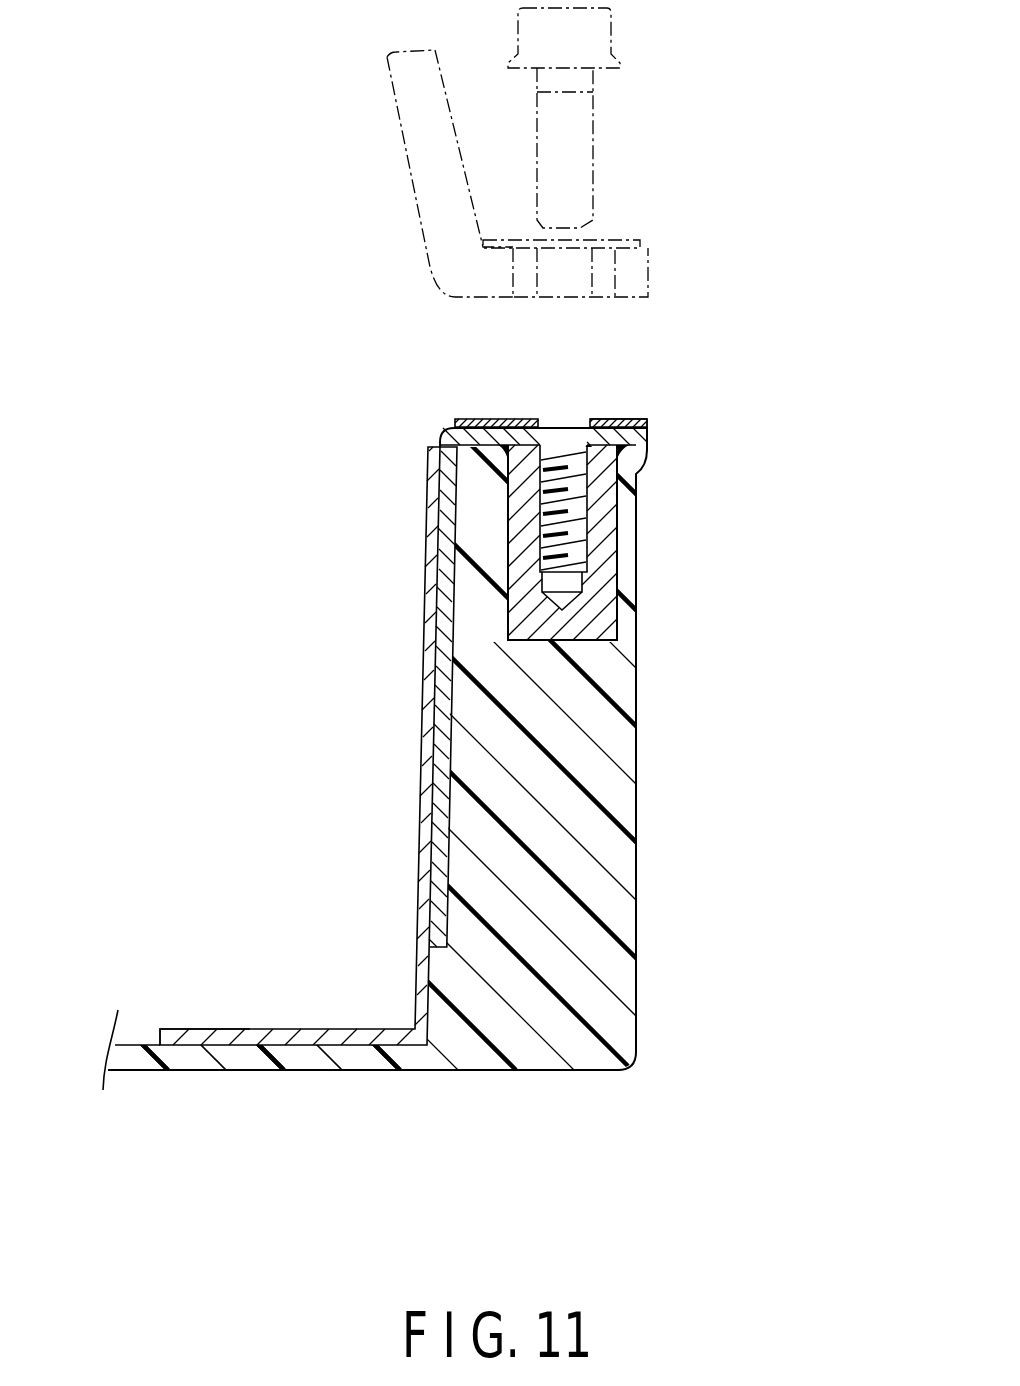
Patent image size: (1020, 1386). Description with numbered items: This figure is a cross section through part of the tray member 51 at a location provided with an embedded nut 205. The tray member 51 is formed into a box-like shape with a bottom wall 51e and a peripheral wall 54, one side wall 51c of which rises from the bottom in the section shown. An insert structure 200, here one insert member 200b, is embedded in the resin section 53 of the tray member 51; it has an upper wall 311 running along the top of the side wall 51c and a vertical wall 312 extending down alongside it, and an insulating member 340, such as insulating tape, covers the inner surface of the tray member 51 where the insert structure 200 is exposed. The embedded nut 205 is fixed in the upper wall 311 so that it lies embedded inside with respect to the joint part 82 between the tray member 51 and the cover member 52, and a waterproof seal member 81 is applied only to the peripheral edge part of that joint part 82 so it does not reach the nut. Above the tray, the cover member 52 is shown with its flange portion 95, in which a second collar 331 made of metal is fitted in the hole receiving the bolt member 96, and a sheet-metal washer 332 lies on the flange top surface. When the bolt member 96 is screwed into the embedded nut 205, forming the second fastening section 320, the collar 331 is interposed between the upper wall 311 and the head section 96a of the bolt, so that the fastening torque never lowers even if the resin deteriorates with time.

The head section 96a is at (612, 40).
The bolt member 96 is at (596, 118).
The washer 332 is at (620, 240).
The flange portion 95 is at (652, 270).
The second collar 331 is at (603, 283).
The cover member 52 is at (388, 92).
The second fastening section 320 is at (487, 343).
The waterproof seal member 81 is at (487, 420).
The joint part 82 is at (652, 414).
The insert structure 200 is at (430, 433).
The upper wall 311 is at (630, 432).
The embedded nut 205 is at (590, 510).
The insert member 200b is at (440, 548).
The side wall 51c is at (563, 700).
The insulating member 340 is at (432, 708).
The resin section 53 is at (613, 802).
The vertical wall 312 is at (455, 878).
The peripheral wall 54 is at (650, 925).
The bottom wall 51e is at (152, 1042).
The tray member 51 is at (345, 1078).